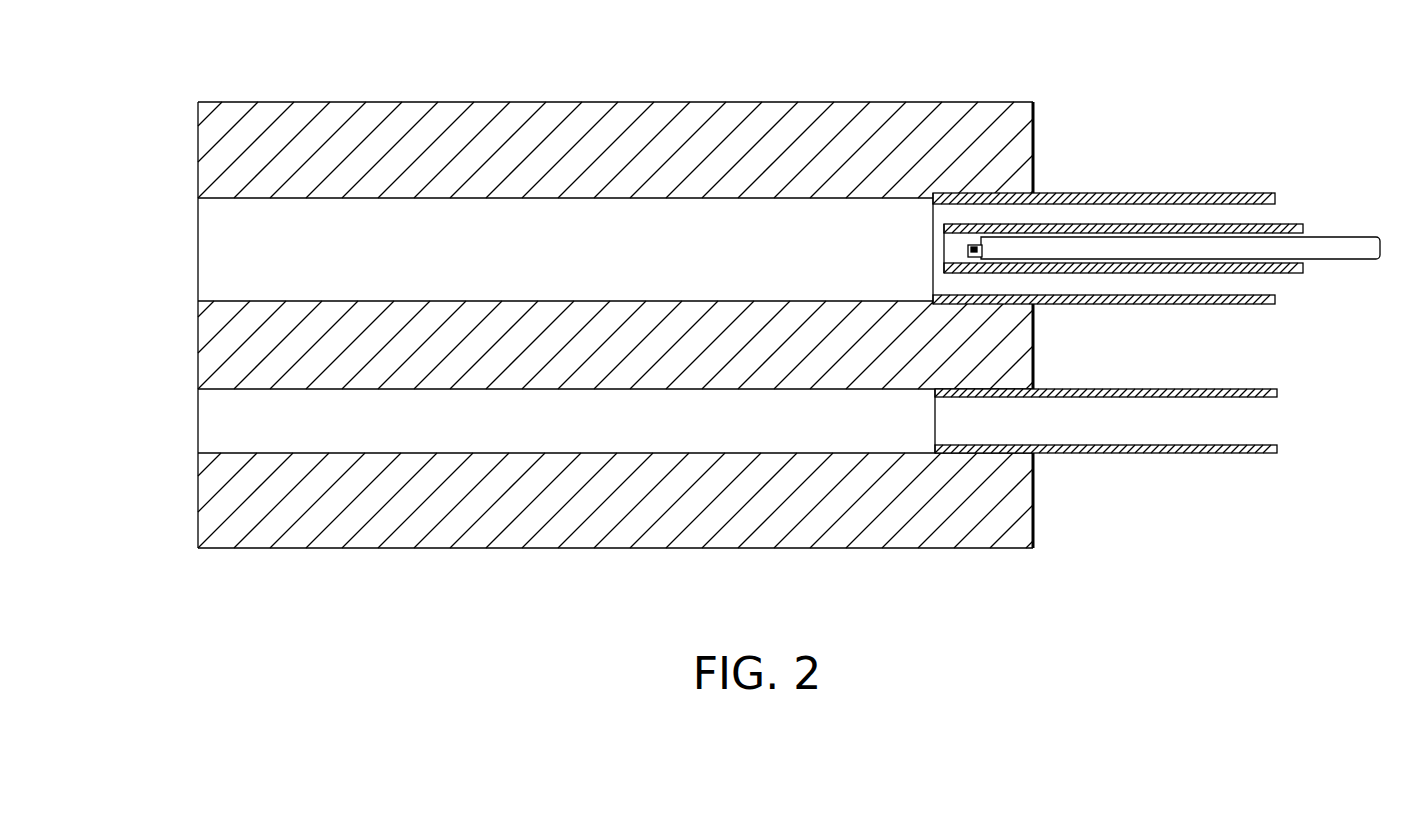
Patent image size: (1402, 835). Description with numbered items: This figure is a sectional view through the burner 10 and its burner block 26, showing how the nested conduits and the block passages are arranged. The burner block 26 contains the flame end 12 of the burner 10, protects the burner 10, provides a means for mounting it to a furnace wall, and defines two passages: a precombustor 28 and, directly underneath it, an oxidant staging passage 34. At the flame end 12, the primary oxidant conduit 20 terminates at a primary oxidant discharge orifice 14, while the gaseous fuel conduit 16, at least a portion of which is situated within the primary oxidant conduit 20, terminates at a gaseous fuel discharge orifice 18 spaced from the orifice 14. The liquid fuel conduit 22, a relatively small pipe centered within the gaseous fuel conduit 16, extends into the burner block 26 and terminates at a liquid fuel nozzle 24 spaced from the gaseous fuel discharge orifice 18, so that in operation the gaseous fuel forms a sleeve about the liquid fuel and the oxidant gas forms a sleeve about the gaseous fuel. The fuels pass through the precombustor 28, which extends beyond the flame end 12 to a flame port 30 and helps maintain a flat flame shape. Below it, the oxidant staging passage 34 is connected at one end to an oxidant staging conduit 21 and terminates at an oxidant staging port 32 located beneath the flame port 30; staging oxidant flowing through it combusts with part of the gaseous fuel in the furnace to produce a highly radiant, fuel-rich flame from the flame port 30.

The burner 10 is at (982, 594).
The flame end 12 is at (944, 238).
The primary oxidant discharge orifice 14 is at (932, 218).
The gaseous fuel conduit 16 is at (1162, 226).
The gaseous fuel discharge orifice 18 is at (944, 250).
The primary oxidant conduit 20 is at (1237, 296).
The oxidant staging conduit 21 is at (1172, 454).
The liquid fuel conduit 22 is at (1333, 238).
The liquid fuel nozzle 24 is at (974, 244).
The burner block 26 is at (678, 548).
The precombustor 28 is at (572, 199).
The flame port 30 is at (198, 228).
The oxidant staging port 32 is at (198, 420).
The oxidant staging passage 34 is at (406, 454).